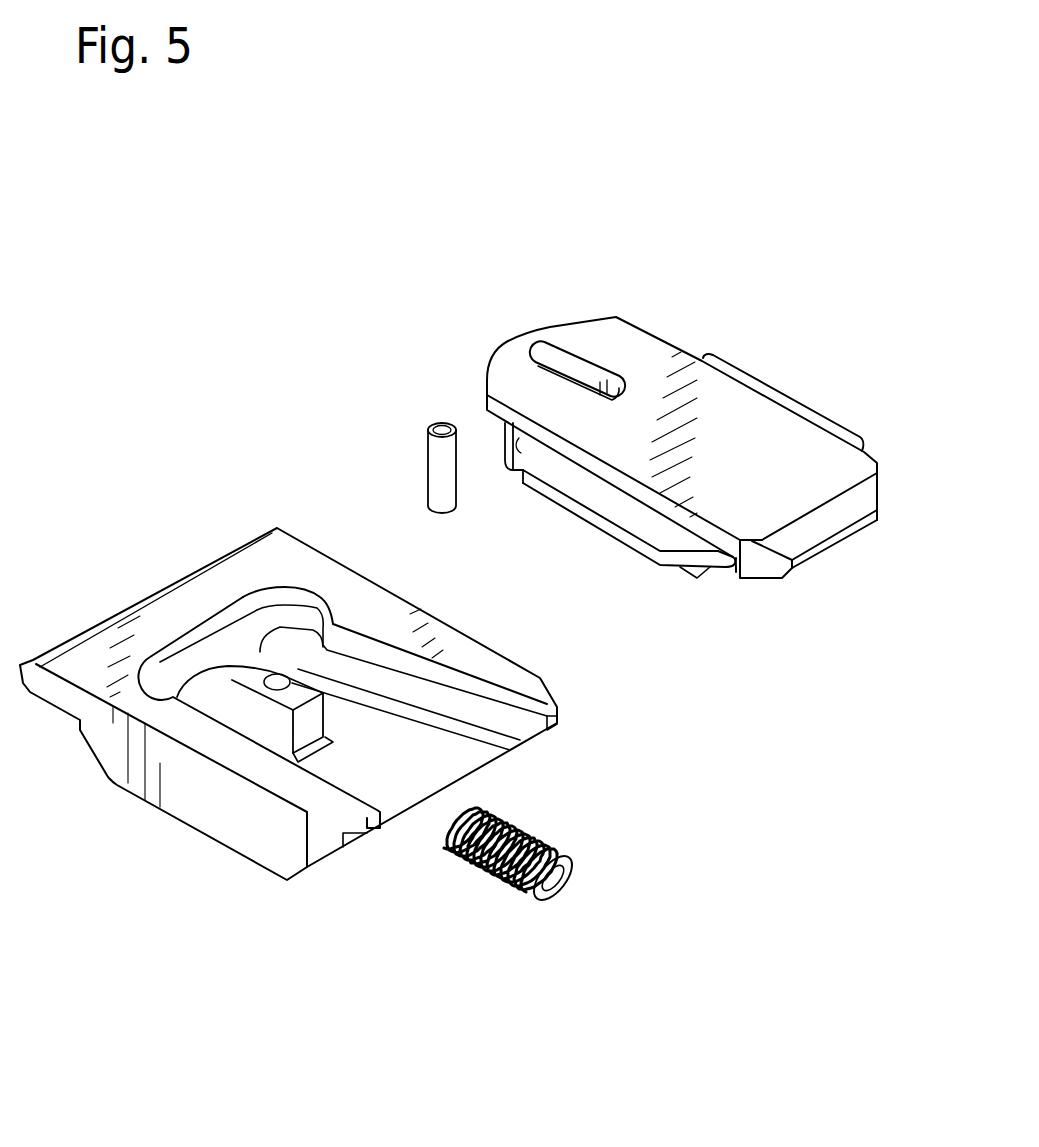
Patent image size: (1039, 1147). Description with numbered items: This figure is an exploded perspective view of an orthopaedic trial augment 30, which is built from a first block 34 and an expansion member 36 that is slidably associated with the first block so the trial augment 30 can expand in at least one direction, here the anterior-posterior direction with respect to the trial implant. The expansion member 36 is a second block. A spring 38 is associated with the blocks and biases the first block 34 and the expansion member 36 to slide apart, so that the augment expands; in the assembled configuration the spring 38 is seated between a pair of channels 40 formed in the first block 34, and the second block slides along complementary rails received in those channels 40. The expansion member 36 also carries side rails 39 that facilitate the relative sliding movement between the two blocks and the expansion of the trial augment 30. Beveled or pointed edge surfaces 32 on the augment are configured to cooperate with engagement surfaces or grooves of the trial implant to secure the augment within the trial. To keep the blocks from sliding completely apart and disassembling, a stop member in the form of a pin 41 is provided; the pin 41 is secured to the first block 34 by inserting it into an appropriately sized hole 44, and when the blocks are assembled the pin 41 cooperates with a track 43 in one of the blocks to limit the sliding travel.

The orthopaedic trial augment 30 is at (316, 331).
The edge surfaces 32 is at (810, 557).
The first block 34 is at (246, 860).
The expansion member 36 is at (666, 357).
The spring 38 is at (553, 852).
The side rails 39 is at (798, 396).
The channels 40 is at (282, 648).
The pin 41 is at (427, 474).
The track 43 is at (555, 350).
The hole 44 is at (323, 708).